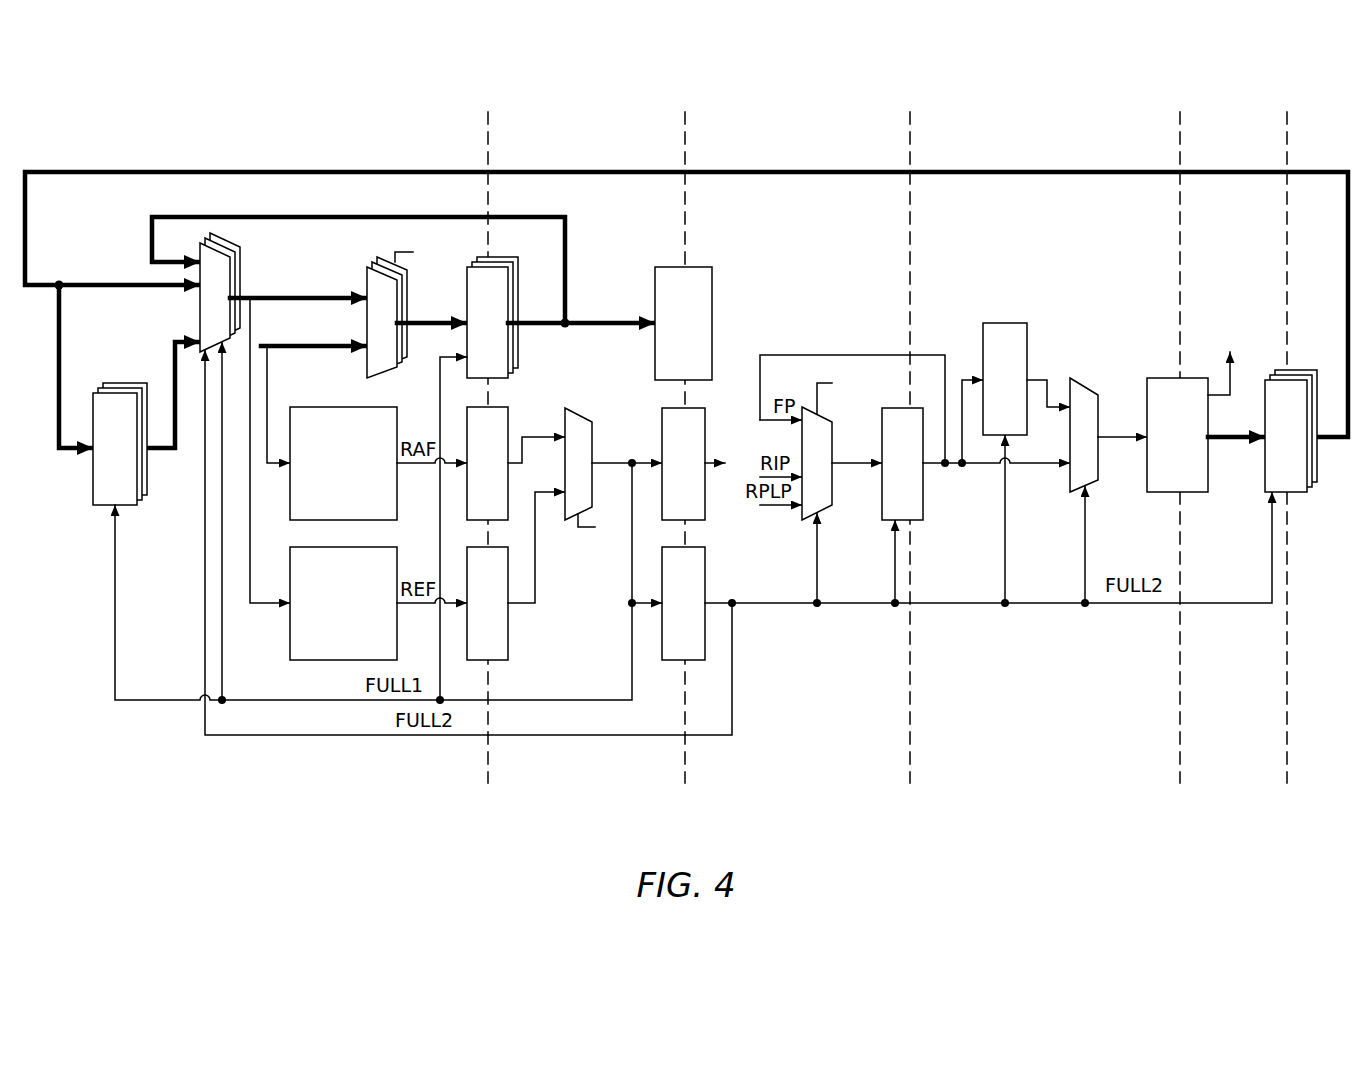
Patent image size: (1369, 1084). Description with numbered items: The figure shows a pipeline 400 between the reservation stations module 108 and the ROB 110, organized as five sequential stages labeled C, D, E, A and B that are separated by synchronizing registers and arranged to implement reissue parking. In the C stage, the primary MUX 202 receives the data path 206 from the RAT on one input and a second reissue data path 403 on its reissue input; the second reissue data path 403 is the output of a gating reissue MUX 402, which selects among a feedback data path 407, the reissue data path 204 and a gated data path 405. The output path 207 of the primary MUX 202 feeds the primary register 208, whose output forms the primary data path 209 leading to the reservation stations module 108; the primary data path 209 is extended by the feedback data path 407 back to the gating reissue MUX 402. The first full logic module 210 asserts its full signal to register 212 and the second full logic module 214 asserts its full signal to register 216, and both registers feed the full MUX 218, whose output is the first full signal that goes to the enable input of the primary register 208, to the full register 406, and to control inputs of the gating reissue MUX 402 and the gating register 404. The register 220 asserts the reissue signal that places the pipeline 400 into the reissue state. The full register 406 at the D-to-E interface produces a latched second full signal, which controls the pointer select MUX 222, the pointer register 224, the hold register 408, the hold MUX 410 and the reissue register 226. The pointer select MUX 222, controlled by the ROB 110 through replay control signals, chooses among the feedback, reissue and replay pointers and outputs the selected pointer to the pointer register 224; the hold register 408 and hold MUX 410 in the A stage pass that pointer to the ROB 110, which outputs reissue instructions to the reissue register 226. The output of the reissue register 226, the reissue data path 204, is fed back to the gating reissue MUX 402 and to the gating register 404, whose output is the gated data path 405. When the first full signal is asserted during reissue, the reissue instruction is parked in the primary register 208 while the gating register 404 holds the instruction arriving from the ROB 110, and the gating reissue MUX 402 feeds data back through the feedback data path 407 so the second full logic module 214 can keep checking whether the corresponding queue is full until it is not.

The pipeline 400 is at (802, 457).
The reissue data path 204 is at (83, 172).
The feedback data path 407 is at (152, 243).
The gated data path 405 is at (172, 377).
The gating register 404 is at (93, 495).
The gating reissue MUX 402 is at (244, 258).
The second reissue data path 403 is at (280, 298).
The data path 206 is at (300, 350).
The primary MUX 202 is at (367, 275).
The multiplexer output 207 is at (404, 292).
The primary register 208 is at (518, 267).
The primary data path 209 is at (568, 327).
The reservation stations module 108 is at (683, 323).
The first full logic module 210 is at (343, 463).
The second full logic module 214 is at (343, 603).
The register 212 is at (510, 425).
The register 216 is at (508, 640).
The full MUX 218 is at (585, 410).
The register 220 is at (660, 411).
The full register 406 is at (705, 575).
The pointer select MUX 222 is at (832, 490).
The pointer register 224 is at (905, 520).
The hold register 408 is at (1005, 323).
The hold MUX 410 is at (1098, 457).
The ROB 110 is at (1206, 398).
The reissue register 226 is at (1307, 483).